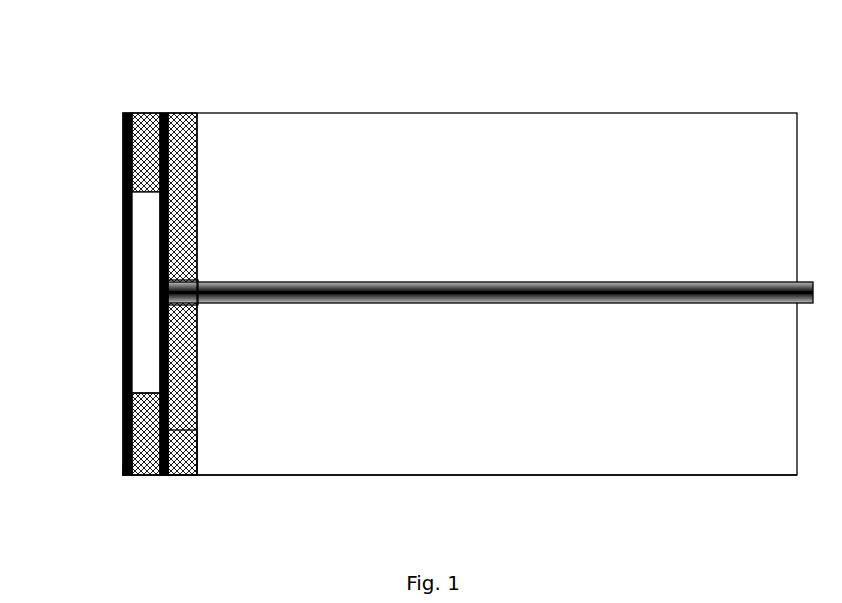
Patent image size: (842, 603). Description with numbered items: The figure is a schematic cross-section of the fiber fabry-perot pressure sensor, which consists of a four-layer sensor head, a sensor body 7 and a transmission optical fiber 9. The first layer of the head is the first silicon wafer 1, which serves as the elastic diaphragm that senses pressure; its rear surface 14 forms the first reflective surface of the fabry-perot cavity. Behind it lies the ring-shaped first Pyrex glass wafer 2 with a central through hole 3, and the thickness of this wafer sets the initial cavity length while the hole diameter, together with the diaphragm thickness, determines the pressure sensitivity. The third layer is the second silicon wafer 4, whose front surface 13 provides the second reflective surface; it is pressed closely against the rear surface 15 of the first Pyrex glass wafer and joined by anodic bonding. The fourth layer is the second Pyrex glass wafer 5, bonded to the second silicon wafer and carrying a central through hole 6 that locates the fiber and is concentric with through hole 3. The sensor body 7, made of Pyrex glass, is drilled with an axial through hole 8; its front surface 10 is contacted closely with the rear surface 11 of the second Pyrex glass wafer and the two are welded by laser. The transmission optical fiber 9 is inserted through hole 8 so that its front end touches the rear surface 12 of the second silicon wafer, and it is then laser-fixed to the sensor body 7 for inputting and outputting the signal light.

The first silicon wafer 1 is at (124, 164).
The first Pyrex glass wafer 2 is at (152, 132).
The central through hole of the first Pyrex glass wafer 3 is at (150, 210).
The second silicon wafer 4 is at (168, 205).
The second Pyrex glass wafer 5 is at (187, 240).
The central through hole of the second Pyrex glass wafer 6 is at (185, 282).
The sensor body 7 is at (487, 263).
The through hole of the sensor body in central axial direction 8 is at (587, 280).
The transmission optical fiber 9 is at (677, 292).
The front surface of the sensor body 10 is at (198, 445).
The rear surface of the second Pyrex glass wafer 11 is at (197, 476).
The rear surface of the second silicon wafer 12 is at (167, 443).
The front surface of the second silicon wafer 13 is at (161, 476).
The rear surface of the first silicon wafer 14 is at (127, 476).
The rear surface of the first Pyrex glass wafer 15 is at (157, 417).